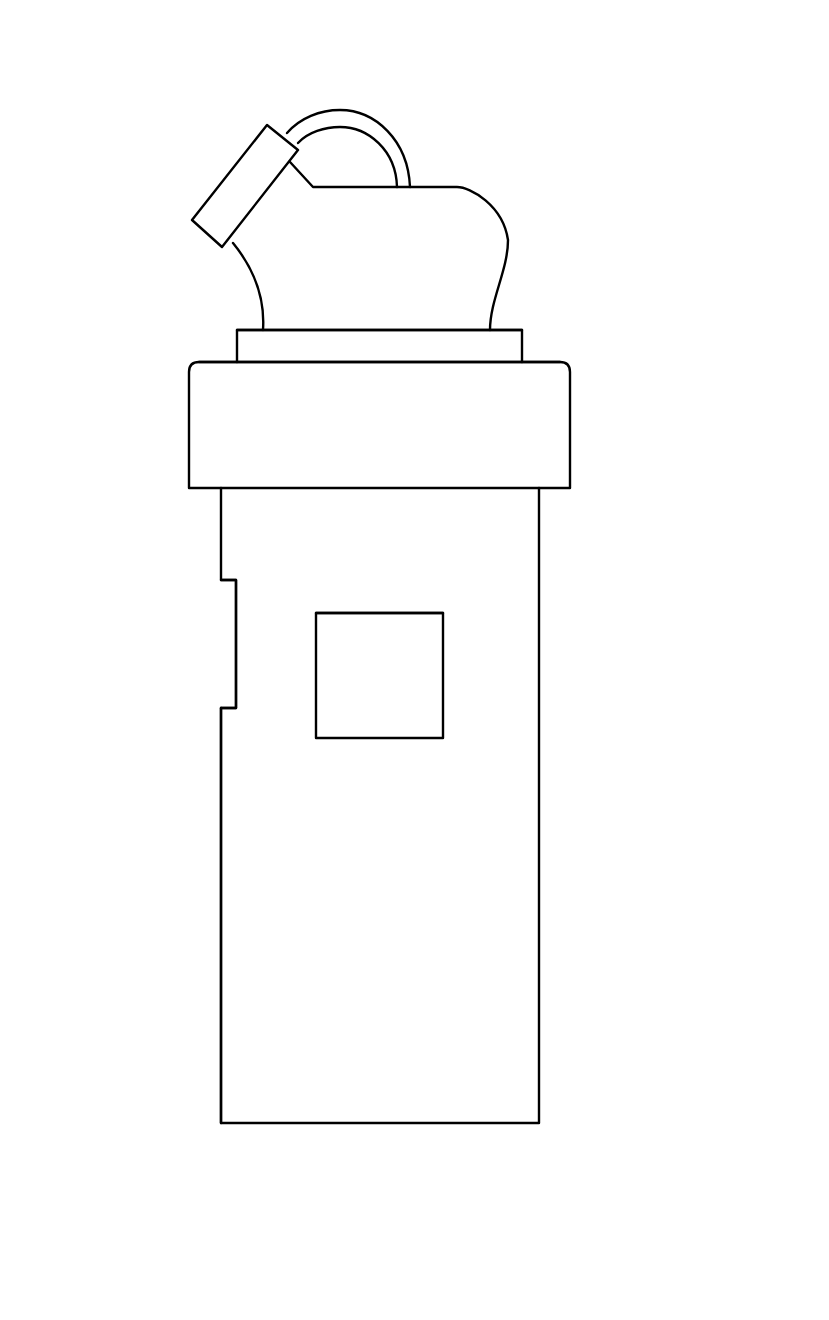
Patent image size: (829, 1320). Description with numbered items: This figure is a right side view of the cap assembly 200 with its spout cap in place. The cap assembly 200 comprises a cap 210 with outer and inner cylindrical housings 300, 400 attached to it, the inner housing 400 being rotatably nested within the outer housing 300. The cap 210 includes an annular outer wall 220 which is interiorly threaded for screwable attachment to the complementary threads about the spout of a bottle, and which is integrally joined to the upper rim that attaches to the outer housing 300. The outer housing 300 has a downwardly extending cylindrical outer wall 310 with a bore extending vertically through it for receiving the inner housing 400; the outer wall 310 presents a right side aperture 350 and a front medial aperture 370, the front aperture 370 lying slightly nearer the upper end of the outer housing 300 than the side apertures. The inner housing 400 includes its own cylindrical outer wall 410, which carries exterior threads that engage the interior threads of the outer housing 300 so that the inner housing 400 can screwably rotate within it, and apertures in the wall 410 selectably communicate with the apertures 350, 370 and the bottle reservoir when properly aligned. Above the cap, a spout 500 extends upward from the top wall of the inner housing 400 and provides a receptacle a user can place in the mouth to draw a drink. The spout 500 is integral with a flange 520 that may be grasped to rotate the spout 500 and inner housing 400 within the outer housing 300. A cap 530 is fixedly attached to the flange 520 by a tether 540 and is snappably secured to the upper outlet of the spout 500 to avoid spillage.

The cap assembly 200 is at (361, 80).
The cap 210 is at (572, 423).
The annular outer wall 220 is at (568, 368).
The outer housing 300 is at (540, 787).
The outer wall 310 is at (250, 900).
The right side aperture 350 is at (378, 738).
The front medial aperture 370 is at (236, 643).
The inner housing 400 is at (237, 340).
The outer wall 410 is at (502, 350).
The spout 500 is at (347, 191).
The flange 520 is at (470, 220).
The cap 530 is at (221, 180).
The tether 540 is at (374, 118).